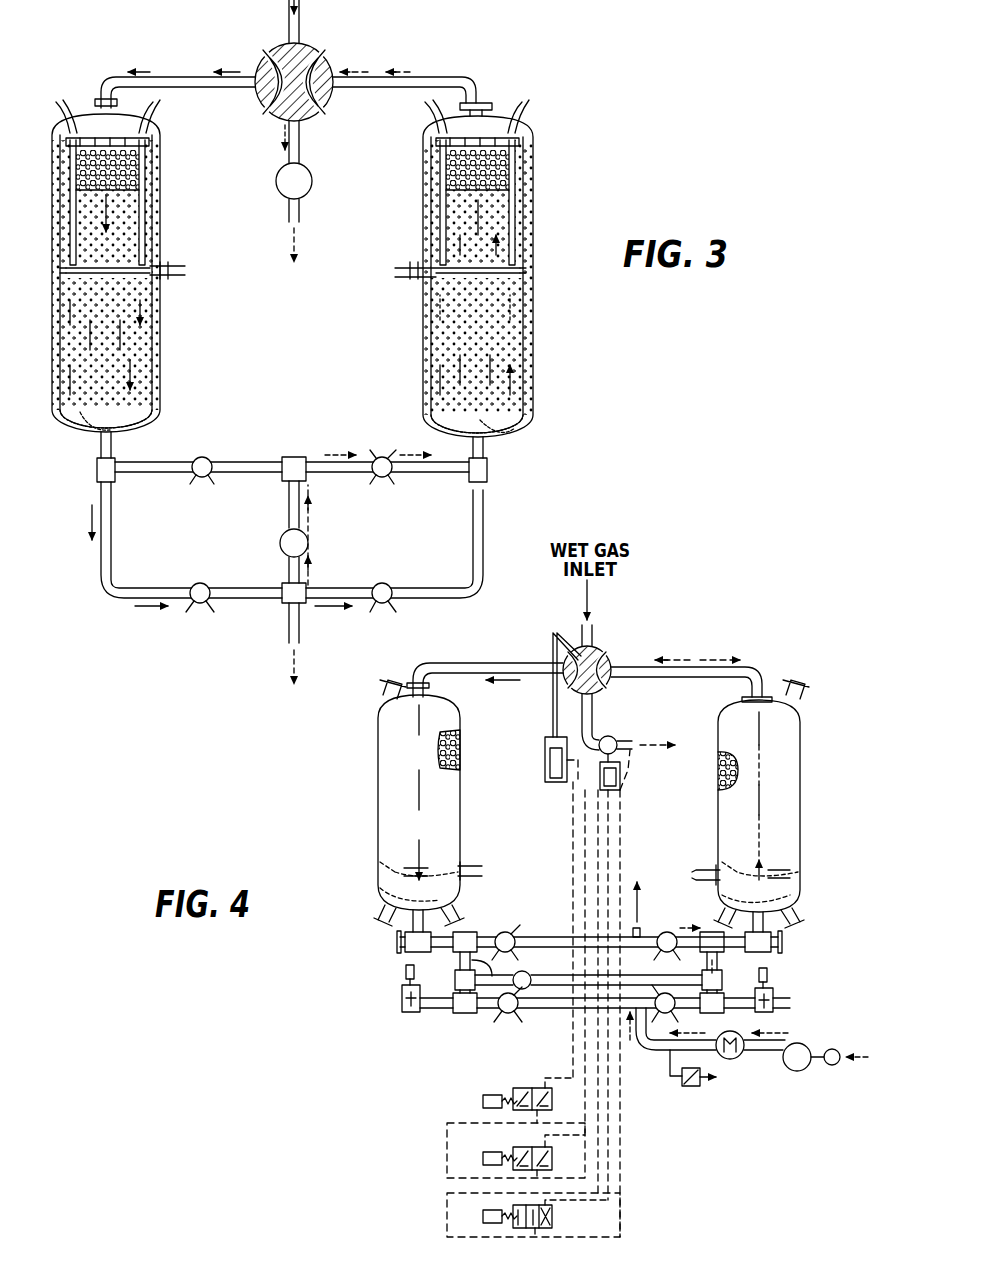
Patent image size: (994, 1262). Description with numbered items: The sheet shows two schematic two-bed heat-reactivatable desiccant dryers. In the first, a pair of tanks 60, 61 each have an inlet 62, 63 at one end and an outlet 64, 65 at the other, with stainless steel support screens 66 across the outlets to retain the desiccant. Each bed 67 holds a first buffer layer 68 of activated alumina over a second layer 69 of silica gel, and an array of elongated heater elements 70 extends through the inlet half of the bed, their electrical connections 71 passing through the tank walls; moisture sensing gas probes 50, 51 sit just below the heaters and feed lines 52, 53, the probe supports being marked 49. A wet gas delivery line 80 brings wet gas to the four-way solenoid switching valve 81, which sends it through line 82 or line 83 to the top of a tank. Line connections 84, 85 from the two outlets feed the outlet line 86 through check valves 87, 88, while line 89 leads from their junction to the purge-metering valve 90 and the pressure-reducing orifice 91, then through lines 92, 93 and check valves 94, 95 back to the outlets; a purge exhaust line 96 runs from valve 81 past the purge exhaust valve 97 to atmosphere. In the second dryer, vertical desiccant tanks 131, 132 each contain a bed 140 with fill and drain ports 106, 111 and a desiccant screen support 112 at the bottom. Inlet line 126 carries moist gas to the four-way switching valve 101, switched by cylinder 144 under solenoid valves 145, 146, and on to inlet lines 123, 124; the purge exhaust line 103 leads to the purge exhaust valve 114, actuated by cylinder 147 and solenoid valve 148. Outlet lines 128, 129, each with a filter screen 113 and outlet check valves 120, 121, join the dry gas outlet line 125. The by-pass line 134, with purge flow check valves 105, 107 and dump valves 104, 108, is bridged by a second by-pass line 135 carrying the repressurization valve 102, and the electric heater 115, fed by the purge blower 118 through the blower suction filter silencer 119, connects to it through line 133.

In FIG. 3, the screen support 49 is at (62, 271).
In FIG. 4, the screen support 49 is at (395, 871).
In FIG. 3, the moisture sensing gas probe 50 is at (152, 268).
In FIG. 4, the moisture sensing gas probe 50 is at (452, 841).
In FIG. 3, the moisture sensing gas probe 51 is at (428, 268).
In FIG. 4, the moisture sensing gas probe 51 is at (725, 856).
In FIG. 4, the line 52 is at (470, 867).
In FIG. 4, the line 53 is at (704, 864).
In FIG. 3, the tank 60 is at (165, 350).
In FIG. 3, the tank 61 is at (418, 354).
In FIG. 3, the inlet 62 is at (96, 100).
In FIG. 3, the inlet 63 is at (490, 105).
In FIG. 3, the outlet 64 is at (97, 449).
In FIG. 3, the outlet 65 is at (488, 452).
In FIG. 3, the support screen 66 is at (70, 426).
In FIG. 3, the bed 67 is at (150, 197).
In FIG. 3, the first buffer layer 68 is at (60, 175).
In FIG. 3, the second layer 69 is at (60, 260).
In FIG. 3, the heater element 70 is at (120, 137).
In FIG. 3, the electrical connection 71 is at (58, 116).
In FIG. 3, the wet gas delivery line 80 is at (302, 24).
In FIG. 3, the four-way solenoid switching valve 81 is at (330, 64).
In FIG. 3, the line 82 is at (190, 75).
In FIG. 3, the line 83 is at (405, 74).
In FIG. 3, the line connection 84 is at (100, 557).
In FIG. 3, the line connection 85 is at (485, 553).
In FIG. 3, the outlet line 86 is at (286, 640).
In FIG. 3, the check valve 87 is at (194, 607).
In FIG. 3, the check valve 88 is at (392, 609).
In FIG. 3, the line 89 is at (282, 571).
In FIG. 3, the purge-metering valve 90 is at (310, 543).
In FIG. 3, the pressure-reducing orifice 91 is at (285, 521).
In FIG. 3, the line 92 is at (226, 460).
In FIG. 3, the line 93 is at (360, 488).
In FIG. 3, the check valve 94 is at (204, 480).
In FIG. 3, the check valve 95 is at (392, 453).
In FIG. 3, the purge exhaust line 96 is at (302, 140).
In FIG. 3, the purge exhaust valve 97 is at (308, 201).
In FIG. 4, the four-way switching valve 101 is at (612, 687).
In FIG. 4, the repressurization valve 102 is at (532, 979).
In FIG. 4, the purge exhaust line 103 is at (594, 721).
In FIG. 4, the dump valve 104 is at (405, 1014).
In FIG. 4, the purge flow check valve 105 is at (500, 1013).
In FIG. 4, the desiccant fill and drain port 106 is at (390, 687).
In FIG. 4, the purge flow check valve 107 is at (650, 1000).
In FIG. 4, the dump valve 108 is at (790, 1004).
In FIG. 4, the desiccant fill and drain port 111 is at (378, 926).
In FIG. 4, the desiccant screen support 112 is at (385, 891).
In FIG. 4, the filter screen 113 is at (400, 949).
In FIG. 4, the purge exhaust valve 114 is at (618, 738).
In FIG. 4, the electric heater 115 is at (733, 1059).
In FIG. 4, the purge blower 118 is at (792, 1071).
In FIG. 4, the blower suction filter silencer 119 is at (828, 1066).
In FIG. 4, the outlet check valve 120 is at (527, 934).
In FIG. 4, the outlet check valve 121 is at (675, 957).
In FIG. 4, the inlet line 123 is at (496, 665).
In FIG. 4, the inlet line 124 is at (703, 663).
In FIG. 4, the dry gas outlet line 125 is at (644, 925).
In FIG. 4, the inlet line 126 is at (594, 637).
In FIG. 4, the outlet line 128 is at (487, 930).
In FIG. 4, the outlet line 129 is at (686, 936).
In FIG. 4, the desiccant tank 131 is at (374, 799).
In FIG. 4, the desiccant tank 132 is at (802, 791).
In FIG. 4, the line 133 is at (648, 1051).
In FIG. 4, the by-pass line 134 is at (547, 1013).
In FIG. 4, the second by-pass line 135 is at (457, 967).
In FIG. 4, the bed 140 is at (460, 754).
In FIG. 4, the cylinder 144 is at (555, 786).
In FIG. 4, the solenoid valve 145 is at (524, 1091).
In FIG. 4, the solenoid valve 146 is at (519, 1151).
In FIG. 4, the cylinder 147 is at (610, 792).
In FIG. 4, the solenoid valve 148 is at (514, 1208).